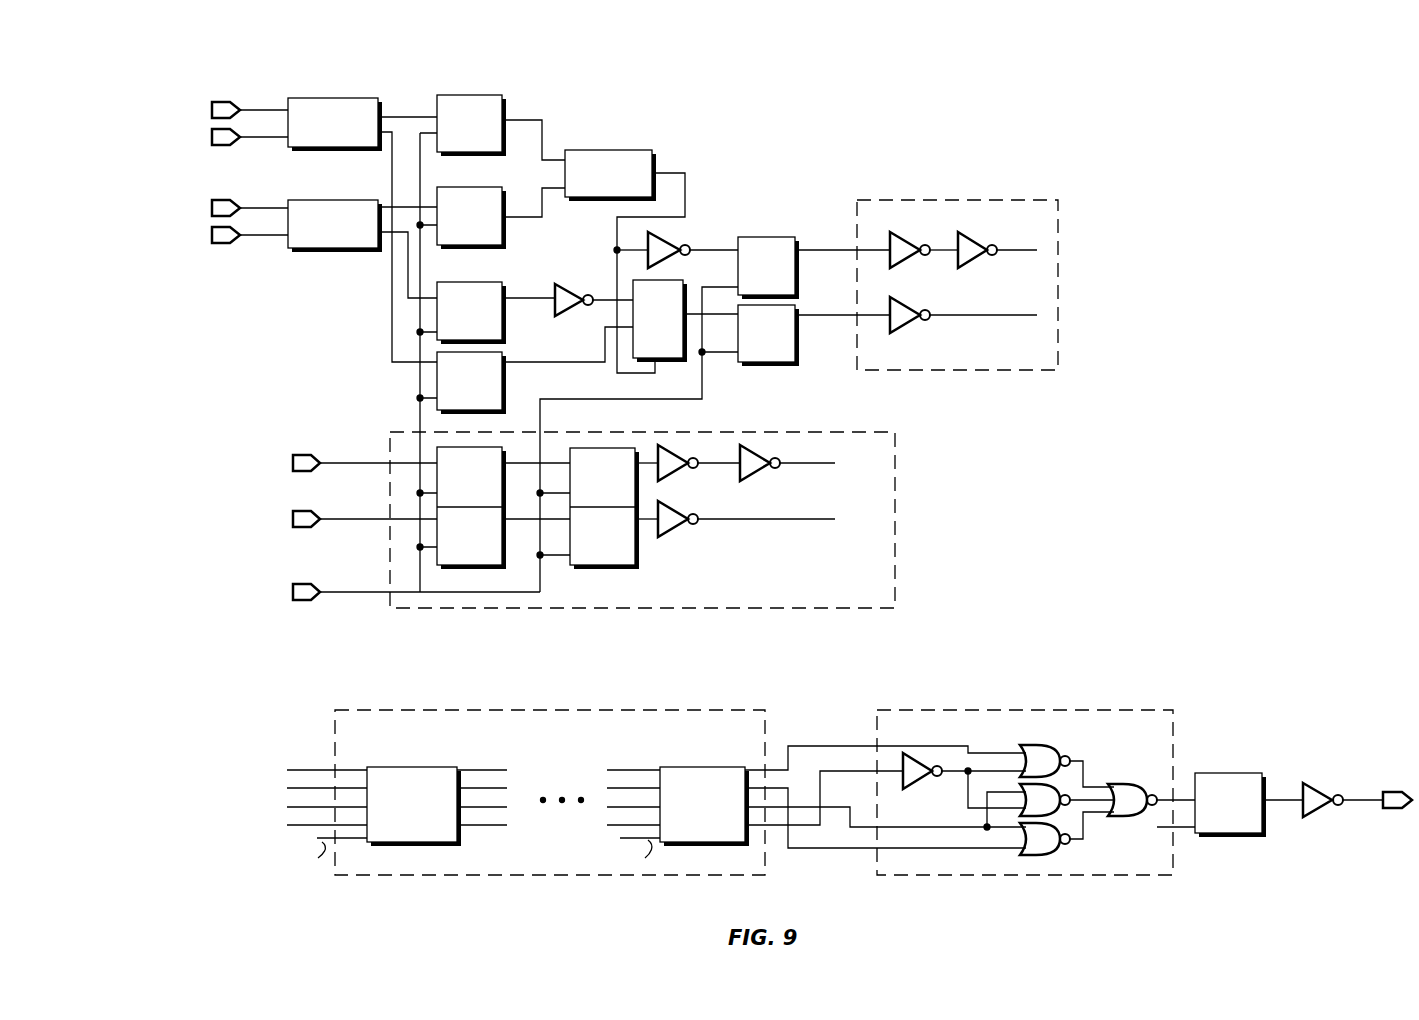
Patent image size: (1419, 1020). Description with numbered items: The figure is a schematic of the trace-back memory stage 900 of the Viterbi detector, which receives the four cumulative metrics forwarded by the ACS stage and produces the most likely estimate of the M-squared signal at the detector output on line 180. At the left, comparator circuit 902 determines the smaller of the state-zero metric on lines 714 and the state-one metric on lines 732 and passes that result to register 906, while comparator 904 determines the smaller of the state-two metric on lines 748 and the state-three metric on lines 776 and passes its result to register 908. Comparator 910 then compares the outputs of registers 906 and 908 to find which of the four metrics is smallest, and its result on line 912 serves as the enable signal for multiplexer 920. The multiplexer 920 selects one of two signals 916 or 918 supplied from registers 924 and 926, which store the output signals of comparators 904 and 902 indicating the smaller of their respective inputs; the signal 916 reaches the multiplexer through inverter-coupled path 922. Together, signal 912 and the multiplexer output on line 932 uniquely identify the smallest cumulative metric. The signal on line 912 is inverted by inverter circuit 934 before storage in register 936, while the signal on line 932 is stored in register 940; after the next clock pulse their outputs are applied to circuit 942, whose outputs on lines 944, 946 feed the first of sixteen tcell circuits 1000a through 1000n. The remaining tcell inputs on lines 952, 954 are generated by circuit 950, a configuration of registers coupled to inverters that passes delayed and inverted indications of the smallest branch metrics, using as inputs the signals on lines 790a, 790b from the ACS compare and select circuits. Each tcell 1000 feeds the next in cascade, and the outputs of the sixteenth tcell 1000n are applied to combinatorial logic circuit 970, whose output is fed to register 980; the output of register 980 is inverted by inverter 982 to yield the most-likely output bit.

The trace-back memory stage 900 is at (1009, 119).
The lines carrying cumulative metric Γ0,k 714 is at (270, 110).
The lines carrying cumulative metric Γ1,k 732 is at (270, 137).
The lines carrying cumulative metric Γ2,k 748 is at (270, 208).
The lines carrying cumulative metric Γ3,k 776 is at (270, 235).
The comparator circuit 902 is at (345, 98).
The comparator 904 is at (320, 252).
The register 906 is at (458, 95).
The register 908 is at (455, 248).
The comparator 910 is at (589, 150).
The line 912 is at (690, 192).
The signal 916 is at (592, 293).
The signal 918 is at (570, 362).
The multiplexer 920 is at (684, 358).
The register output line 922 is at (552, 296).
The register 924 is at (505, 330).
The register 926 is at (505, 372).
The line 932 is at (693, 312).
The inverter circuit 934 is at (668, 240).
The register 936 is at (786, 237).
The register 940 is at (781, 364).
The circuit 942 is at (957, 285).
The line 944 is at (1037, 252).
The line 946 is at (1037, 317).
The circuit 950 is at (560, 610).
The line 952 is at (788, 465).
The line 954 is at (788, 521).
The line 790a is at (362, 462).
The line 790b is at (362, 518).
The tcell circuit 1000 is at (526, 775).
The first tcell circuit 1000a is at (456, 844).
The sixteenth tcell circuit 1000n is at (690, 846).
The combinatorial logic circuit 970 is at (1025, 792).
The register 980 is at (1250, 835).
The inverter 982 is at (1315, 783).
The line 180 is at (1399, 810).